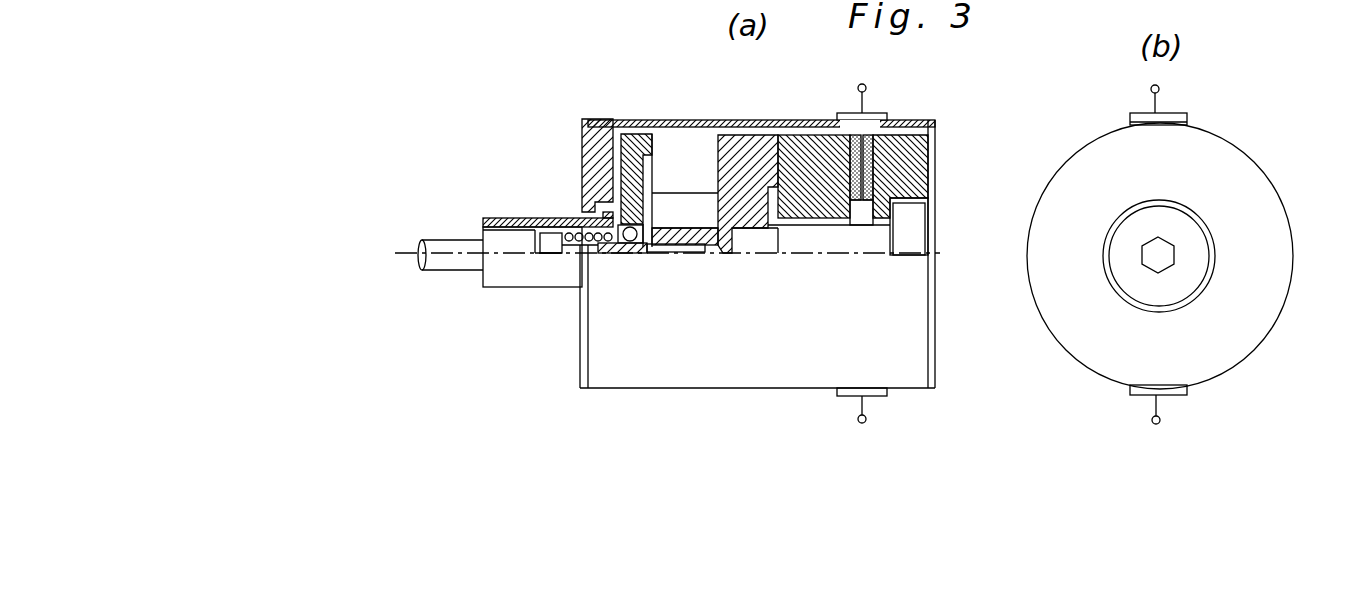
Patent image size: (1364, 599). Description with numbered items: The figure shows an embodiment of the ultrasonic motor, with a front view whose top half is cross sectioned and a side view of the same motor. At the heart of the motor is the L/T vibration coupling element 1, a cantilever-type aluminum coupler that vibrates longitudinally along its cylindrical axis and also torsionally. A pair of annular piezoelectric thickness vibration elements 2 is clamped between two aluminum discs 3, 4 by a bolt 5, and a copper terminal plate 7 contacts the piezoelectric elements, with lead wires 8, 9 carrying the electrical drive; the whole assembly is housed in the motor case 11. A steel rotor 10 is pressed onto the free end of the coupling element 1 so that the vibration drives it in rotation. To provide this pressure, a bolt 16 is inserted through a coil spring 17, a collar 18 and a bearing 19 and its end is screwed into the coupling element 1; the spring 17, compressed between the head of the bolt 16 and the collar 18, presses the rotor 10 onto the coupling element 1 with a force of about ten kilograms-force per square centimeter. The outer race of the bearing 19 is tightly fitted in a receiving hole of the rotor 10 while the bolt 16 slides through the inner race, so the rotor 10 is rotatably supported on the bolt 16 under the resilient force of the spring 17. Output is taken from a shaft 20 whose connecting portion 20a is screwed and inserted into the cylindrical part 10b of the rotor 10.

The ultrasonic longitudinal/torsional vibration coupling element 1 is at (733, 135).
The piezoelectric thickness vibration elements 2 is at (855, 160).
The aluminum disc 3 is at (802, 133).
The aluminum disc 4 is at (925, 155).
The bolt 5 is at (912, 228).
The terminal plate 7 is at (1106, 0).
The lead wire 8 is at (866, 96).
The lead wire 9 is at (866, 405).
The rotor 10 is at (636, 133).
The cylindrical part 10b is at (545, 218).
The motor case 11 is at (603, 119).
The bolt 16 is at (547, 248).
The coil spring 17 is at (580, 245).
The collar 18 is at (607, 253).
The bearing 19 is at (632, 245).
The shaft 20 is at (425, 240).
The connecting portion 20a is at (500, 240).